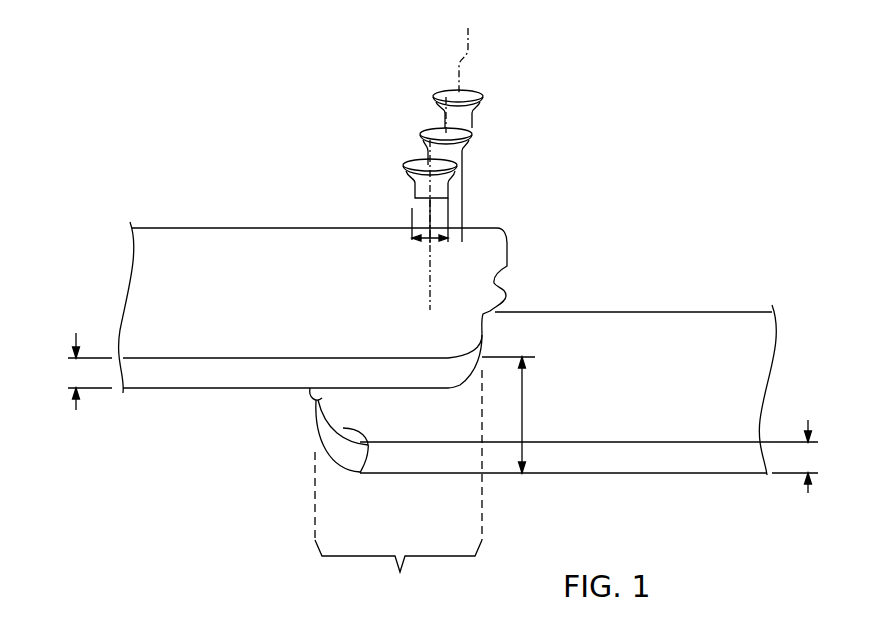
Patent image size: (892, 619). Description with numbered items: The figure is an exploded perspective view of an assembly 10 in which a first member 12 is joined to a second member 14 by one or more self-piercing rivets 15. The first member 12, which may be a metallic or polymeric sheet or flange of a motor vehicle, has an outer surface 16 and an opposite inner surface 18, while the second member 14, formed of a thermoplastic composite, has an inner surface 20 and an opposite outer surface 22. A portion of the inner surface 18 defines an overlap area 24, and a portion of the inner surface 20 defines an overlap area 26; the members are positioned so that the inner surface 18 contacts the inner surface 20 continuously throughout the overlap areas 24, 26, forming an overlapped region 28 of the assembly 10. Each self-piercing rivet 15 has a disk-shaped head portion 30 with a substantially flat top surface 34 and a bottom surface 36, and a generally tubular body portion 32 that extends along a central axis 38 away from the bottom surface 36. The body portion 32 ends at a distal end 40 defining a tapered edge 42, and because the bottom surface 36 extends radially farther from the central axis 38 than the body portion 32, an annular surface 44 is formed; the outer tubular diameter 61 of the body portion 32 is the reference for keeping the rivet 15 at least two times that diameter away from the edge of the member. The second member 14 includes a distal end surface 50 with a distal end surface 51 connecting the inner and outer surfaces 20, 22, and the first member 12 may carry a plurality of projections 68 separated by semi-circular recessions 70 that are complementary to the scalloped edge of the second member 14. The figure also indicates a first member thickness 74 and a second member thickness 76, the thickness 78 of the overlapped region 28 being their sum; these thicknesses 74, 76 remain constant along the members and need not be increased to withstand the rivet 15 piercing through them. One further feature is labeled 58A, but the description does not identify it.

The assembly 10 is at (668, 177).
The first member 12 is at (123, 260).
The second member 14 is at (788, 335).
The self-piercing rivet 15 is at (485, 90).
The outer surface 16 is at (208, 242).
The inner surface 18 is at (163, 388).
The inner surface 20 is at (747, 323).
The outer surface 22 is at (512, 473).
The overlap area 24 is at (373, 388).
The overlap area 26 is at (360, 474).
The overlapped region 28 is at (398, 484).
The head portion 30 is at (485, 97).
The body portion 32 is at (478, 117).
The top surface 34 is at (443, 90).
The bottom surface 36 is at (437, 110).
The central axis 38 is at (456, 155).
The distal end 40 is at (417, 202).
The tapered edge 42 is at (460, 165).
The annular surface 44 is at (470, 137).
The distal end surface 50 is at (295, 402).
The distal end surface 51 is at (313, 430).
The bend / joint area 58A is at (318, 400).
The outer tubular diameter 61 is at (426, 242).
The projections 68 is at (502, 278).
The semi-circular recessions 70 is at (488, 315).
The first member thickness 74 is at (75, 373).
The second member thickness 76 is at (805, 458).
The thickness of the overlapped region 78 is at (523, 423).